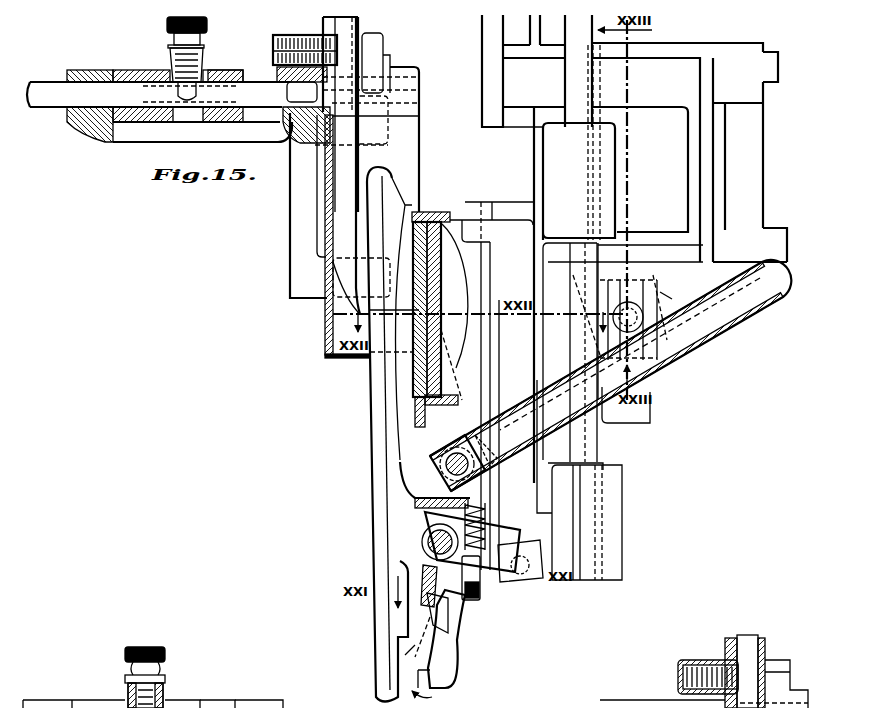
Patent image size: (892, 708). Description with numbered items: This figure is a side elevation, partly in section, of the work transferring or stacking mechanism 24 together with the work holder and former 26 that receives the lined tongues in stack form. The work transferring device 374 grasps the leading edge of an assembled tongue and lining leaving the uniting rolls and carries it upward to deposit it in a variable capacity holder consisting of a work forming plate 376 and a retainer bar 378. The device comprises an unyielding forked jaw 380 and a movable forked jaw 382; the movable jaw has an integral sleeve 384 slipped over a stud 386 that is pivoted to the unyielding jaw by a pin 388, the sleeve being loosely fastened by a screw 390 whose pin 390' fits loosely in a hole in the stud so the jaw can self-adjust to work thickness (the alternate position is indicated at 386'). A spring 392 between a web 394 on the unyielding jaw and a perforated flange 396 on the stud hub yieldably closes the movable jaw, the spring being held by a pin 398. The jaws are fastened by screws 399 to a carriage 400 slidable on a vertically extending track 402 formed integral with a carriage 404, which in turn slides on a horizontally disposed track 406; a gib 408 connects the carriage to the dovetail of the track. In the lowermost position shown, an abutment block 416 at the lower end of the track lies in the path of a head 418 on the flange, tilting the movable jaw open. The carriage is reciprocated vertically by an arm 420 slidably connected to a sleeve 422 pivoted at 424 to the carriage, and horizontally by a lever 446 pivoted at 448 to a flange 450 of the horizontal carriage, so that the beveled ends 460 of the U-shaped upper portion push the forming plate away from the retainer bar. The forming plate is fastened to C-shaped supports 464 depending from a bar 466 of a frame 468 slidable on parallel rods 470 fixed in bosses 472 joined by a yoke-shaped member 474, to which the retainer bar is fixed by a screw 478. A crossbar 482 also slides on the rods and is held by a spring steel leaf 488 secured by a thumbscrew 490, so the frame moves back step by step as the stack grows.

The work transferring or stacking mechanism 24 is at (330, 391).
The work holder and former 26 is at (268, 194).
The work transferring device 374 is at (442, 696).
The work forming plate 376 is at (326, 318).
The retainer bar 378 is at (358, 154).
The unyielding forked jaw 380 is at (375, 640).
The movable forked jaw 382 is at (455, 647).
The sleeve 384 is at (480, 598).
The stud 386 is at (469, 617).
The link (alternate position) 386' is at (416, 639).
The pin 388 is at (423, 580).
The screw 390 is at (504, 594).
The pin 390' is at (374, 667).
The spring 392 is at (520, 537).
The web 394 is at (400, 485).
The perforated flange 396 is at (428, 543).
The pin 398 is at (480, 520).
The screws 399 is at (446, 319).
The carriage 400 is at (579, 296).
The vertically extending track 402 is at (483, 98).
The carriage 404 is at (672, 67).
The horizontally disposed track 406 is at (774, 84).
The gib 408 is at (598, 168).
The abutment block 416 is at (542, 562).
The head 418 is at (538, 513).
The arm 420 is at (735, 318).
The sleeve 422 is at (674, 365).
The pivot 424 is at (450, 452).
The lever 446 is at (652, 421).
The pivot 448 is at (625, 319).
The flange 450 is at (670, 289).
The beveled ends 460 is at (375, 398).
The C-shaped supports 464 is at (290, 221).
The bar 466 is at (110, 58).
The frame 468 is at (100, 141).
The parallel horizontally disposed rods 470 is at (50, 80).
The bosses 472 is at (405, 62).
The yoke-shaped member 474 is at (366, 36).
The screw 478 is at (274, 46).
The crossbar 482 is at (228, 62).
The spring steel leaf 488 is at (172, 52).
The thumbscrew 490 is at (167, 24).